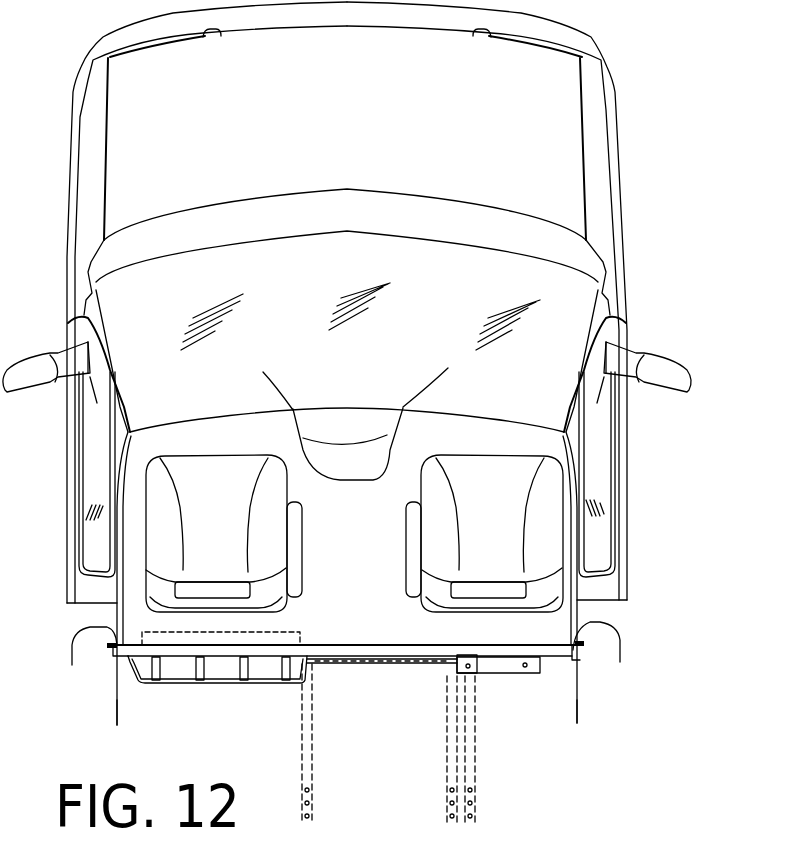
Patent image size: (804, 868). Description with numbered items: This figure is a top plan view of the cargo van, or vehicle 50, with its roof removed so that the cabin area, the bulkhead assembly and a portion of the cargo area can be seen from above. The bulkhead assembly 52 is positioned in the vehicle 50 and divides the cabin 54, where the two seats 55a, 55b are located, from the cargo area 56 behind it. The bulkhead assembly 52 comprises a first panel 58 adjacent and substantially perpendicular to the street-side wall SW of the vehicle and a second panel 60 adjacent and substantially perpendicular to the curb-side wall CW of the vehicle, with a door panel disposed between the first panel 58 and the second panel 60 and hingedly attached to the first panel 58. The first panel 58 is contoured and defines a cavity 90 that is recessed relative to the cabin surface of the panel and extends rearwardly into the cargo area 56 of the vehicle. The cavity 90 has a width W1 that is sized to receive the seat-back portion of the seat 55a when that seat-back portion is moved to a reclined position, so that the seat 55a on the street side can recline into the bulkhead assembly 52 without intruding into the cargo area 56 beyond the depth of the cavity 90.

The vehicle 50 is at (637, 136).
The bulkhead assembly 52 is at (347, 684).
The cabin 54 is at (367, 533).
The seat 55a is at (237, 533).
The seat 55b is at (513, 533).
The cargo area 56 is at (397, 789).
The first panel 58 is at (137, 673).
The second panel 60 is at (546, 672).
The cavity 90 is at (232, 660).
The width of cavity W1 is at (216, 632).
The street-side wall SW is at (120, 703).
The curb-side wall CW is at (573, 707).